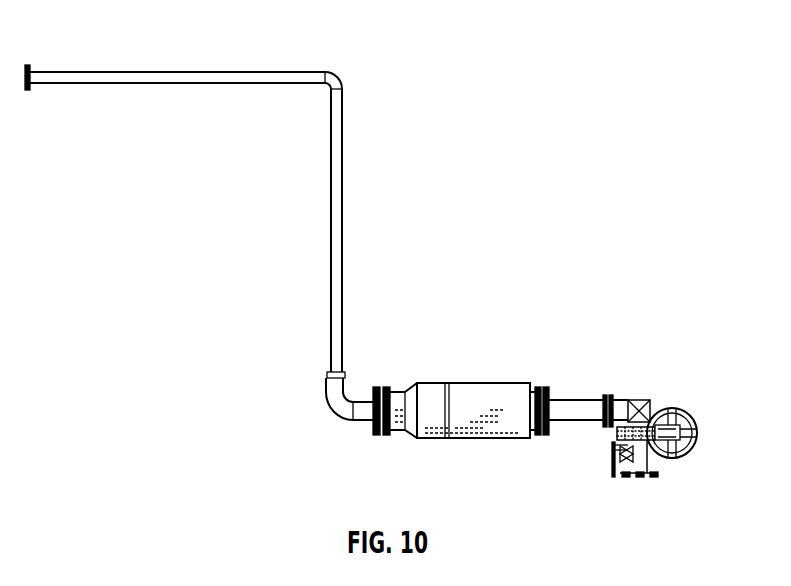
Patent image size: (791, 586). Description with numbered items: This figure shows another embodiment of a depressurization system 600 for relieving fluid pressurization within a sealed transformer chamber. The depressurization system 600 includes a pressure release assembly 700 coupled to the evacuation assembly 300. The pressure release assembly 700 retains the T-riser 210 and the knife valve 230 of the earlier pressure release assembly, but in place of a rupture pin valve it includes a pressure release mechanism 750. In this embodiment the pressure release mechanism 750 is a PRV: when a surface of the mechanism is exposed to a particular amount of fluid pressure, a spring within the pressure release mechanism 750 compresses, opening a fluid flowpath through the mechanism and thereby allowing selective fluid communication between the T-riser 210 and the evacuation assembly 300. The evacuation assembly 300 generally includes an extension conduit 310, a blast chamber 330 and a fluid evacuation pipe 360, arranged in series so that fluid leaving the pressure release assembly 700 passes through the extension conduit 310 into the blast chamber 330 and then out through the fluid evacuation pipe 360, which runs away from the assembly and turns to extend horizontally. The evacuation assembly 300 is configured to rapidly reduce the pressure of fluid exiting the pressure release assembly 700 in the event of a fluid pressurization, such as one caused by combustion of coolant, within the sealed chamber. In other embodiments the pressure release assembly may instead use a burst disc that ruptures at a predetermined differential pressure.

The fluid evacuation pipe 360 is at (180, 73).
The evacuation assembly 300 is at (372, 163).
The blast chamber 330 is at (478, 390).
The extension conduit 310 is at (565, 408).
The depressurization system 600 is at (646, 333).
The pressure release mechanism 750 is at (638, 399).
The pressure release assembly 700 is at (687, 399).
The knife valve 230 is at (694, 440).
The T-riser 210 is at (611, 456).